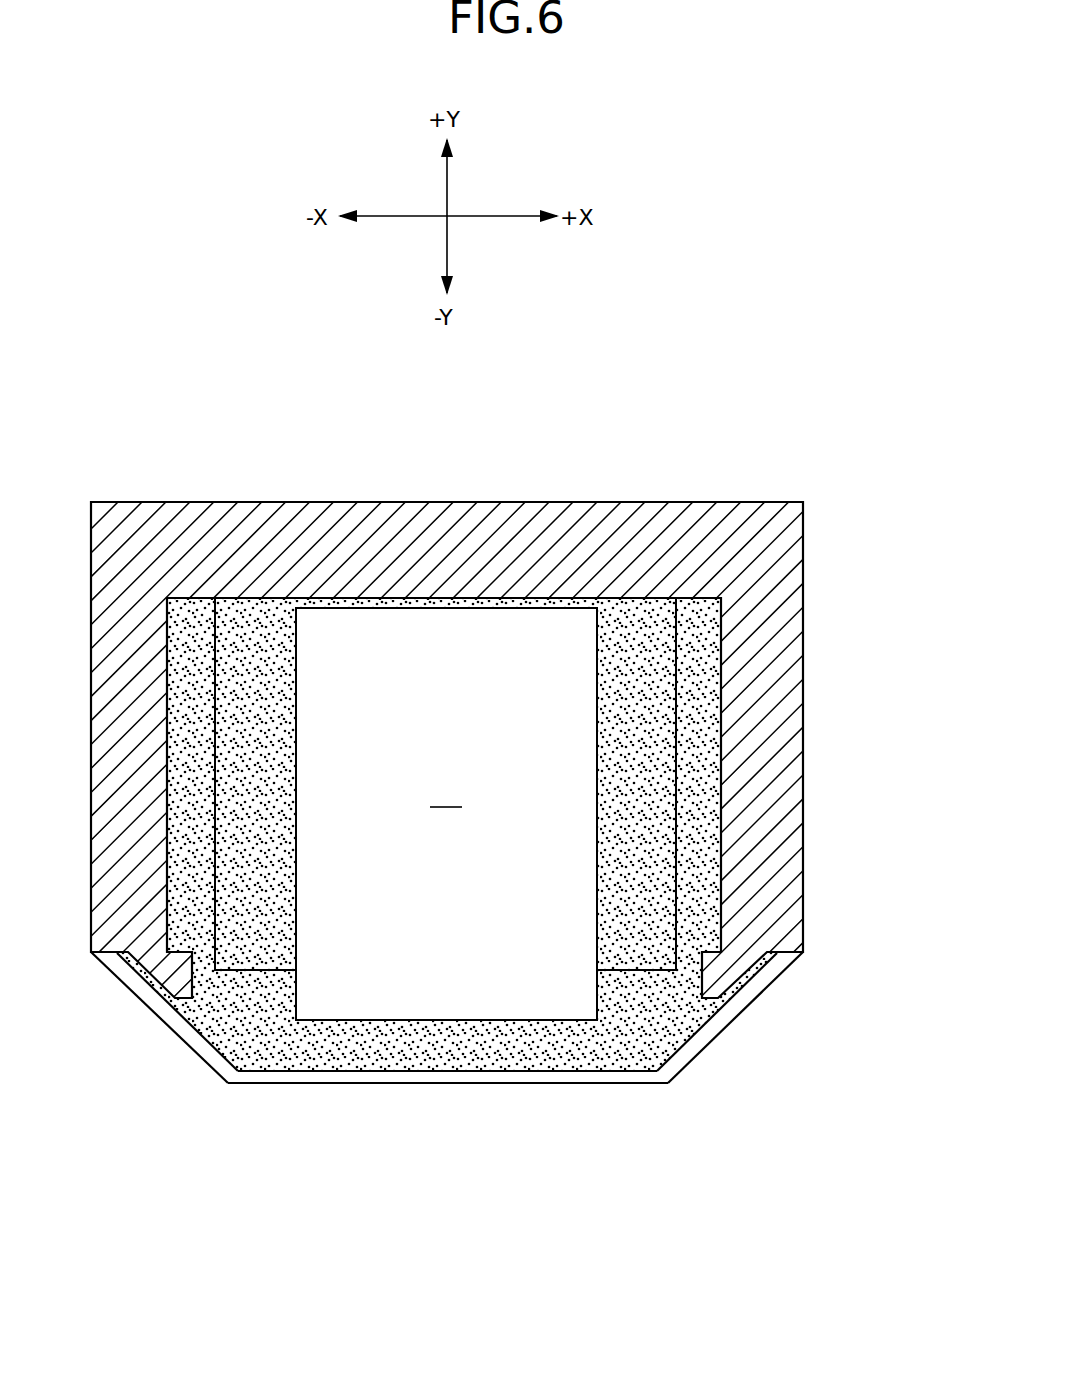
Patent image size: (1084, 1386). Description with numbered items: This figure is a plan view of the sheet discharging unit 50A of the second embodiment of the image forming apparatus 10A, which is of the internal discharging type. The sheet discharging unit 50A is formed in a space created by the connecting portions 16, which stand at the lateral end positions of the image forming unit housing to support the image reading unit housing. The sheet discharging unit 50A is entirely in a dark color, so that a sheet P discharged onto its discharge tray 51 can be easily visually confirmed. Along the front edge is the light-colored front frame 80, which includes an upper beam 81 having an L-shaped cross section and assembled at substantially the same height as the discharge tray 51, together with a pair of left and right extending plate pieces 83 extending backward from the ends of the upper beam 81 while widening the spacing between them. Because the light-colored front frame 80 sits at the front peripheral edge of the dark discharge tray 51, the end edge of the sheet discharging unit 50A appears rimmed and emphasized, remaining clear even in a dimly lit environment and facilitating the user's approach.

The image forming apparatus 10A is at (542, 811).
The connecting portions 16 is at (753, 795).
The sheet discharging unit 50A is at (647, 697).
The discharge tray 51 is at (627, 623).
The front frame 80 is at (447, 1111).
The upper beam 81 is at (647, 1205).
The extending plate pieces 83 is at (185, 1025).